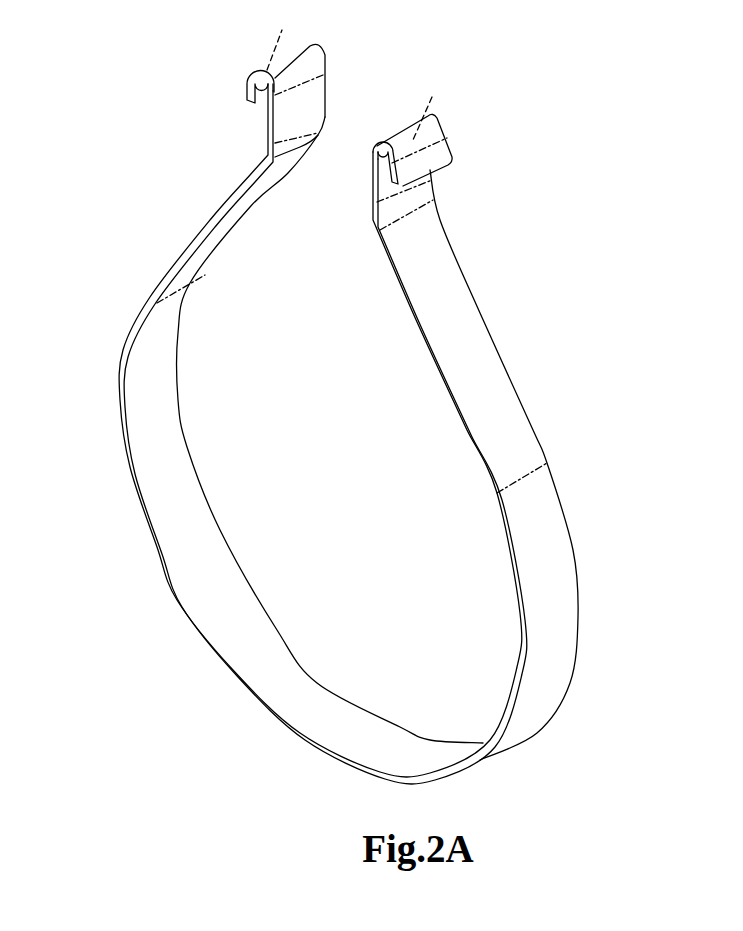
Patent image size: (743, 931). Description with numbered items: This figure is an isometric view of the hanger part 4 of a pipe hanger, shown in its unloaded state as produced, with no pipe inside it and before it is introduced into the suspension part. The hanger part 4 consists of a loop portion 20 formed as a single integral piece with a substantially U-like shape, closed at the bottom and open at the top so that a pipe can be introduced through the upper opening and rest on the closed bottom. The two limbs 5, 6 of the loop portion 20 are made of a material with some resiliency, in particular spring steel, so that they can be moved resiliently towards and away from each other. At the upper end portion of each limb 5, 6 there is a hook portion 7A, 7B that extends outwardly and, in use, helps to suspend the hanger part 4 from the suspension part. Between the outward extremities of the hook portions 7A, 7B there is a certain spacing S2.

The hanger part 4 is at (649, 333).
The limb 5 is at (472, 337).
The limb 6 is at (198, 250).
The hook portion 7A is at (430, 128).
The hook portion 7B is at (280, 83).
The loop portion 20 is at (238, 643).
The spacing S2 is at (282, 32).